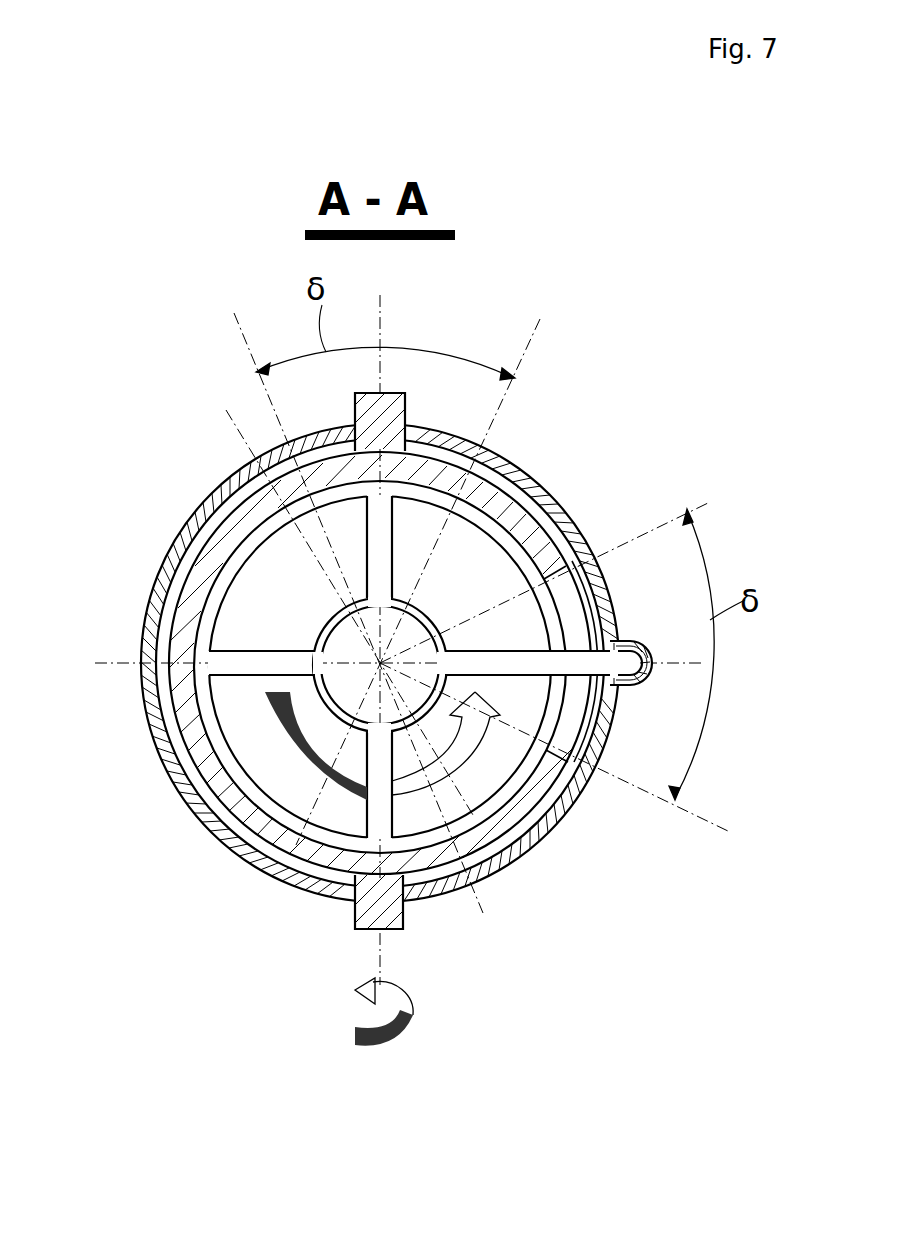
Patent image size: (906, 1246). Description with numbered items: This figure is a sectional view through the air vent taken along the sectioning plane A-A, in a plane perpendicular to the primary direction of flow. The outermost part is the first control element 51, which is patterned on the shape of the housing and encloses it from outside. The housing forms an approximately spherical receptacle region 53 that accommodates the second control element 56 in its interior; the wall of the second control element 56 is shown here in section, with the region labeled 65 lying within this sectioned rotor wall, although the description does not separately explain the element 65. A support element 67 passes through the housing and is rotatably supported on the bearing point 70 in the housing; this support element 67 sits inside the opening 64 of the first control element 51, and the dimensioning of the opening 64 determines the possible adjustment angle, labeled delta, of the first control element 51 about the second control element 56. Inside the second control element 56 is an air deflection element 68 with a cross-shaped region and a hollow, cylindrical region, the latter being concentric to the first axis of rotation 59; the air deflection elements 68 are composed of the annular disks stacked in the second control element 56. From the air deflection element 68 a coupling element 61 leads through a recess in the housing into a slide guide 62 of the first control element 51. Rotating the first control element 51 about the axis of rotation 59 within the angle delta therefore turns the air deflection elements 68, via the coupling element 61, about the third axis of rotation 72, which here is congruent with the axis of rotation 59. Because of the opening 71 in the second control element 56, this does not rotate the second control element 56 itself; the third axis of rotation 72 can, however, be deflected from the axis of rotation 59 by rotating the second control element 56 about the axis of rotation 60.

The first control element 51 is at (202, 513).
The receptacle region 53 is at (185, 545).
The second control element 56 is at (187, 720).
The first axis of rotation 59 is at (230, 837).
The axis of rotation 60 is at (385, 945).
The coupling element 61 is at (628, 690).
The slide guide 62 is at (630, 685).
The opening 64 is at (478, 445).
The rotor liner 65 is at (195, 620).
The support element 67 is at (405, 395).
The air deflection element 68 is at (540, 577).
The bearing point 70 is at (323, 435).
The opening 71 is at (597, 790).
The third axis of rotation 72 is at (405, 718).